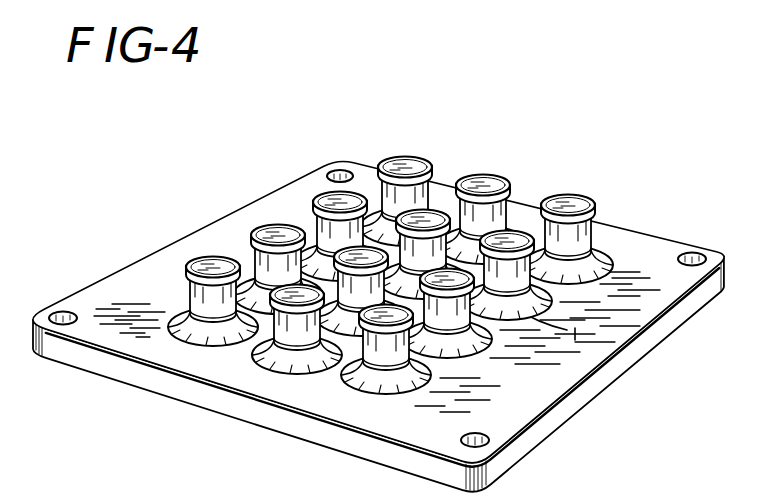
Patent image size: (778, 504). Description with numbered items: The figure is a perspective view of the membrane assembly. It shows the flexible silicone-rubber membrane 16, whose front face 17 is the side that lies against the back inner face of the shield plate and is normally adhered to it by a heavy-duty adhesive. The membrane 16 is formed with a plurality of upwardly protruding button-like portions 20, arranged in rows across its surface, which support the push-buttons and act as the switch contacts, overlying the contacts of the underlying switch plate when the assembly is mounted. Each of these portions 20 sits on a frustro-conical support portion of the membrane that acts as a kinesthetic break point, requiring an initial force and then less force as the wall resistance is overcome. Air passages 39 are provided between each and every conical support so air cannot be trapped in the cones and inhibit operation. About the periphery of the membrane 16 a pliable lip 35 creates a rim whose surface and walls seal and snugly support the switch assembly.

The membrane 16 is at (378, 277).
The front face 17 is at (378, 326).
The button-like portions 20 is at (390, 289).
The lip 35 is at (565, 405).
The air passages 39 is at (333, 362).